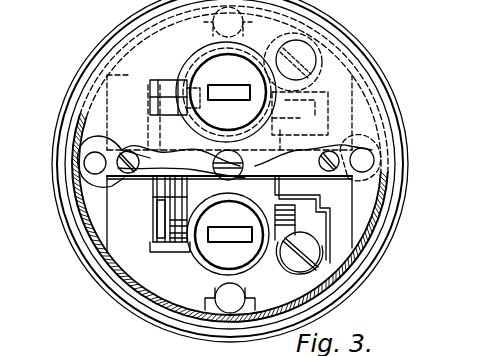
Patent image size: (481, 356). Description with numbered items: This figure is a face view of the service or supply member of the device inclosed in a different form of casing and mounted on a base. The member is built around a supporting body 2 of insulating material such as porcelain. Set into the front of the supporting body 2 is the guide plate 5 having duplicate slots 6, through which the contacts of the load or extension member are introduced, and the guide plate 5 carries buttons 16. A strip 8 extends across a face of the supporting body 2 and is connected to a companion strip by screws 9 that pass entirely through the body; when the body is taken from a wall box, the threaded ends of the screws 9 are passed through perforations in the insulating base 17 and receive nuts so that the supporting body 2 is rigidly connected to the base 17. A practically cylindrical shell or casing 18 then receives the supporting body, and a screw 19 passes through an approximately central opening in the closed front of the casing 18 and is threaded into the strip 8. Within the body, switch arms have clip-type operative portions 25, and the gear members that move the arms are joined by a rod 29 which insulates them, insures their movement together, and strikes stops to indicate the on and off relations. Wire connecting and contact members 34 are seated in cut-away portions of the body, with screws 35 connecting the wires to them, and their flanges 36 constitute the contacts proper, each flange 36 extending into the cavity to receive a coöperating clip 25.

The supporting body 2 is at (98, 235).
The guide plate 5 is at (165, 218).
The slots 6 is at (218, 91).
The strip 8 is at (148, 188).
The screws 9 is at (128, 152).
The buttons 16 is at (186, 98).
The insulating base 17 is at (388, 247).
The shell or casing 18 is at (340, 289).
The screw 19 is at (278, 200).
The operative portions 25 is at (318, 209).
The rod 29 is at (195, 200).
The wire connecting and contact members 34 is at (317, 313).
The screws 35 is at (322, 72).
The flanges 36 is at (278, 204).